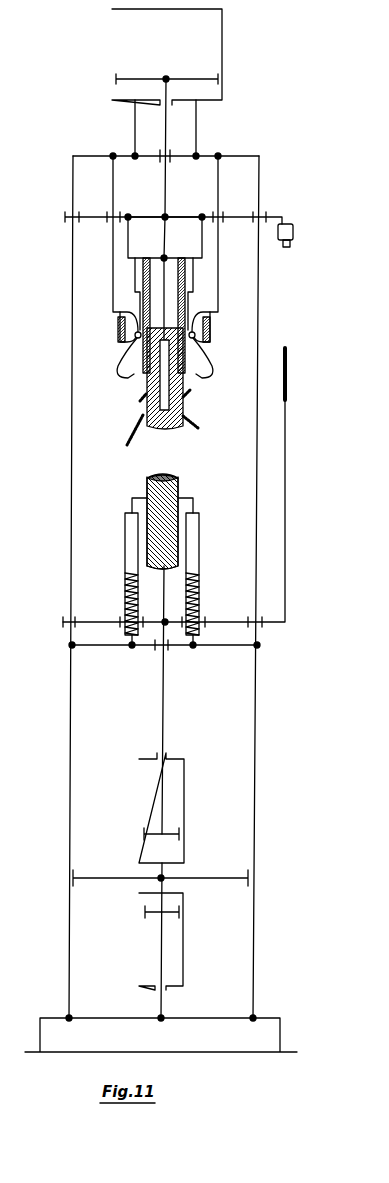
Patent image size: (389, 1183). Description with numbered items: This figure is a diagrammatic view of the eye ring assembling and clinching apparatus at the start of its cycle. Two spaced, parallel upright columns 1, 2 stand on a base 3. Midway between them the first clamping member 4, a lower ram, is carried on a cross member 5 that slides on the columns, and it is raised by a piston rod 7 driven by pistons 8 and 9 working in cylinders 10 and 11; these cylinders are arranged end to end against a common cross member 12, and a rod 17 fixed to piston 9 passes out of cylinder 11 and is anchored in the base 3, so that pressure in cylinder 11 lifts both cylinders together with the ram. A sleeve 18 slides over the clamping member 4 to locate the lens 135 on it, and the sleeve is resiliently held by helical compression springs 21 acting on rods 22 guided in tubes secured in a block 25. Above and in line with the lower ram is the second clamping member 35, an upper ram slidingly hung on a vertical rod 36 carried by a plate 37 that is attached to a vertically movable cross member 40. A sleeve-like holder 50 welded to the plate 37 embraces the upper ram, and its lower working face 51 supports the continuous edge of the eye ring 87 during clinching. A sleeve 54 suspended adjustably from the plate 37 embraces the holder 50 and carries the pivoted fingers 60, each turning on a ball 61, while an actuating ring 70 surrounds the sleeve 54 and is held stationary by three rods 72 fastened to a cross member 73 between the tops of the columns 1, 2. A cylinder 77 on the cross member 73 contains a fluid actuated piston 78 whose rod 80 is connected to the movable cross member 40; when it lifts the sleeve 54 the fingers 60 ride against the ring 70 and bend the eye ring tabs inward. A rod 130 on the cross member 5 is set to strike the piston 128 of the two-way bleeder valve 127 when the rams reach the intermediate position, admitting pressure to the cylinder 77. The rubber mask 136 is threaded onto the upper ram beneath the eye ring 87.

The supporting column 1 is at (72, 512).
The supporting column 2 is at (255, 713).
The base 3 is at (100, 1017).
The first clamping member 4 is at (170, 492).
The cross member 5 is at (58, 617).
The piston rod 7 is at (163, 706).
The piston 8 is at (170, 828).
The piston 9 is at (148, 915).
The cylinder 10 is at (184, 773).
The cylinder 11 is at (183, 898).
The cross member 12 is at (100, 877).
The rod 17 is at (162, 1002).
The sleeve 18 is at (147, 484).
The helical compression spring 21 is at (125, 590).
The rod 22 is at (125, 512).
The block 25 is at (93, 646).
The second clamping member 35 is at (180, 408).
The vertical rod 36 is at (170, 262).
The plate 37 is at (153, 254).
The vertically movable cross member 40 is at (63, 213).
The sleeve-like holder 50 is at (183, 355).
The working face 51 is at (147, 378).
The sleeve 54 is at (188, 305).
The finger 60 is at (118, 365).
The ball 61 is at (118, 343).
The actuating ring 70 is at (210, 323).
The rod 72 is at (112, 293).
The cross member 73 is at (92, 155).
The cylinder 77 is at (223, 62).
The piston 78 is at (147, 79).
The rod 80 is at (167, 198).
The eye ring 87 is at (140, 400).
The two-way bleeder valve 127 is at (293, 232).
The piston 128 is at (290, 247).
The rod 130 is at (287, 375).
The lens 135 is at (173, 472).
The mask 136 is at (128, 440).